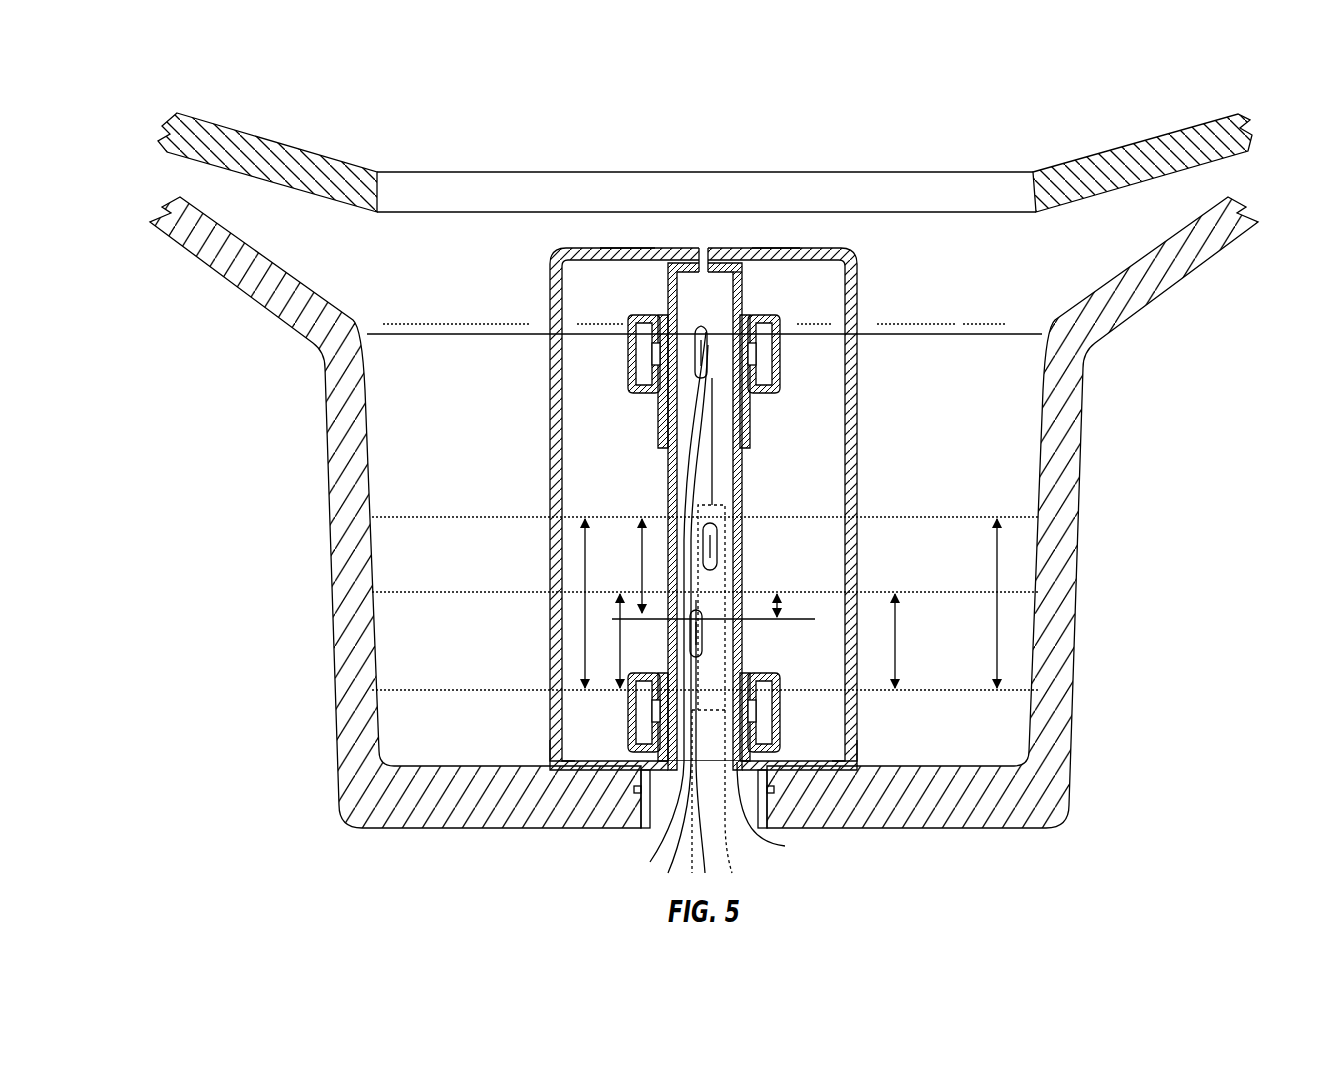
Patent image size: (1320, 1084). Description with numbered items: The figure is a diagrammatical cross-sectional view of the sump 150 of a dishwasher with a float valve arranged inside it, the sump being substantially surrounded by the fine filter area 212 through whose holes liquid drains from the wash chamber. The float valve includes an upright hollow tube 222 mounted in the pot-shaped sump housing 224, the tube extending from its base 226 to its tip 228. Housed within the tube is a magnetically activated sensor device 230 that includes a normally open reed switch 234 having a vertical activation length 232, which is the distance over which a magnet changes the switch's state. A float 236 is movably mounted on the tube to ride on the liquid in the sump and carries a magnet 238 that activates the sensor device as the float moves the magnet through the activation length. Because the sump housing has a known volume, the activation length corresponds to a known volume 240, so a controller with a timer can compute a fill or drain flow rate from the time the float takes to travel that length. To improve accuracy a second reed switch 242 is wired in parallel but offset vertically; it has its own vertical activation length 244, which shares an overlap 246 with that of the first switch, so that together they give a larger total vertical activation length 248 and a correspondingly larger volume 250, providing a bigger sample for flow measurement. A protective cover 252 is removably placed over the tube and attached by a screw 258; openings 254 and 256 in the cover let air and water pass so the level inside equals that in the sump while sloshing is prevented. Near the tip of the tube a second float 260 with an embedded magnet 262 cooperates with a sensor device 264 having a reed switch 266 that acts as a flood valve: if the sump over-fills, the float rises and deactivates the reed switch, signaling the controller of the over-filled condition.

The sump 150 is at (1115, 465).
The fine filter area 212 is at (1075, 163).
The upright hollow tube 222 is at (742, 470).
The sump housing 224 is at (1075, 432).
The base 226 is at (785, 813).
The tip 228 is at (742, 272).
The magnetically activated sensor device 230 is at (718, 580).
The vertical activation length 232 is at (617, 657).
The reed switch 234 is at (702, 630).
The float 236 is at (780, 697).
The magnet 238 is at (760, 712).
The known volume 240 is at (895, 640).
The second reed switch 242 is at (718, 548).
The vertical activation length 244 is at (642, 555).
The overlap 246 is at (780, 604).
The vertical activation length 248 is at (585, 540).
The volume 250 is at (990, 548).
The protective cover 252 is at (860, 290).
The opening 254 is at (655, 248).
The opening 256 is at (550, 750).
The screw 258 is at (700, 255).
The second float 260 is at (780, 365).
The magnet 262 is at (756, 349).
The sensor device 264 is at (712, 322).
The reed switch 266 is at (697, 335).